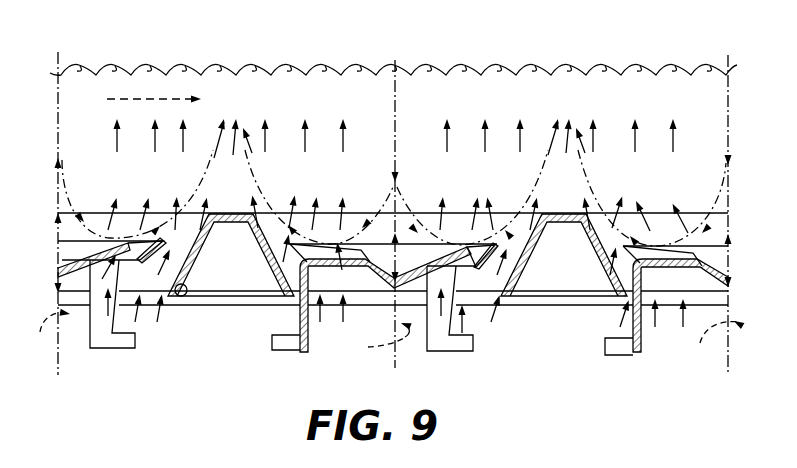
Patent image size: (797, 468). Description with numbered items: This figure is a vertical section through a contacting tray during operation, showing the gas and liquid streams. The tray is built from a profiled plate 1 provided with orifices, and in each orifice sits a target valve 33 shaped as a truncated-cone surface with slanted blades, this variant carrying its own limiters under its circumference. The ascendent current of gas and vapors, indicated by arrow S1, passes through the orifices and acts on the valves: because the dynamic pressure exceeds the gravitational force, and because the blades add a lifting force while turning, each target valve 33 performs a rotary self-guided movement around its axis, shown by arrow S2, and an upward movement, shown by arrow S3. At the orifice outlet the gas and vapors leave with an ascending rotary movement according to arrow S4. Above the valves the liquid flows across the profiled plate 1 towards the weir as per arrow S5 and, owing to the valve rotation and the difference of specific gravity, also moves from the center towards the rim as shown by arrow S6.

The profiled plate 1 is at (178, 300).
The target valve 33 is at (374, 272).
The ascendent current of gas and vapors S1 is at (467, 318).
The rotary self-guided movement S2 is at (404, 338).
The upward movement S3 is at (390, 284).
The ascending rotary movement of gas and vapors S4 is at (284, 207).
The liquid passage towards the weir S5 is at (162, 100).
The liquid movement from center towards rim S6 is at (396, 146).